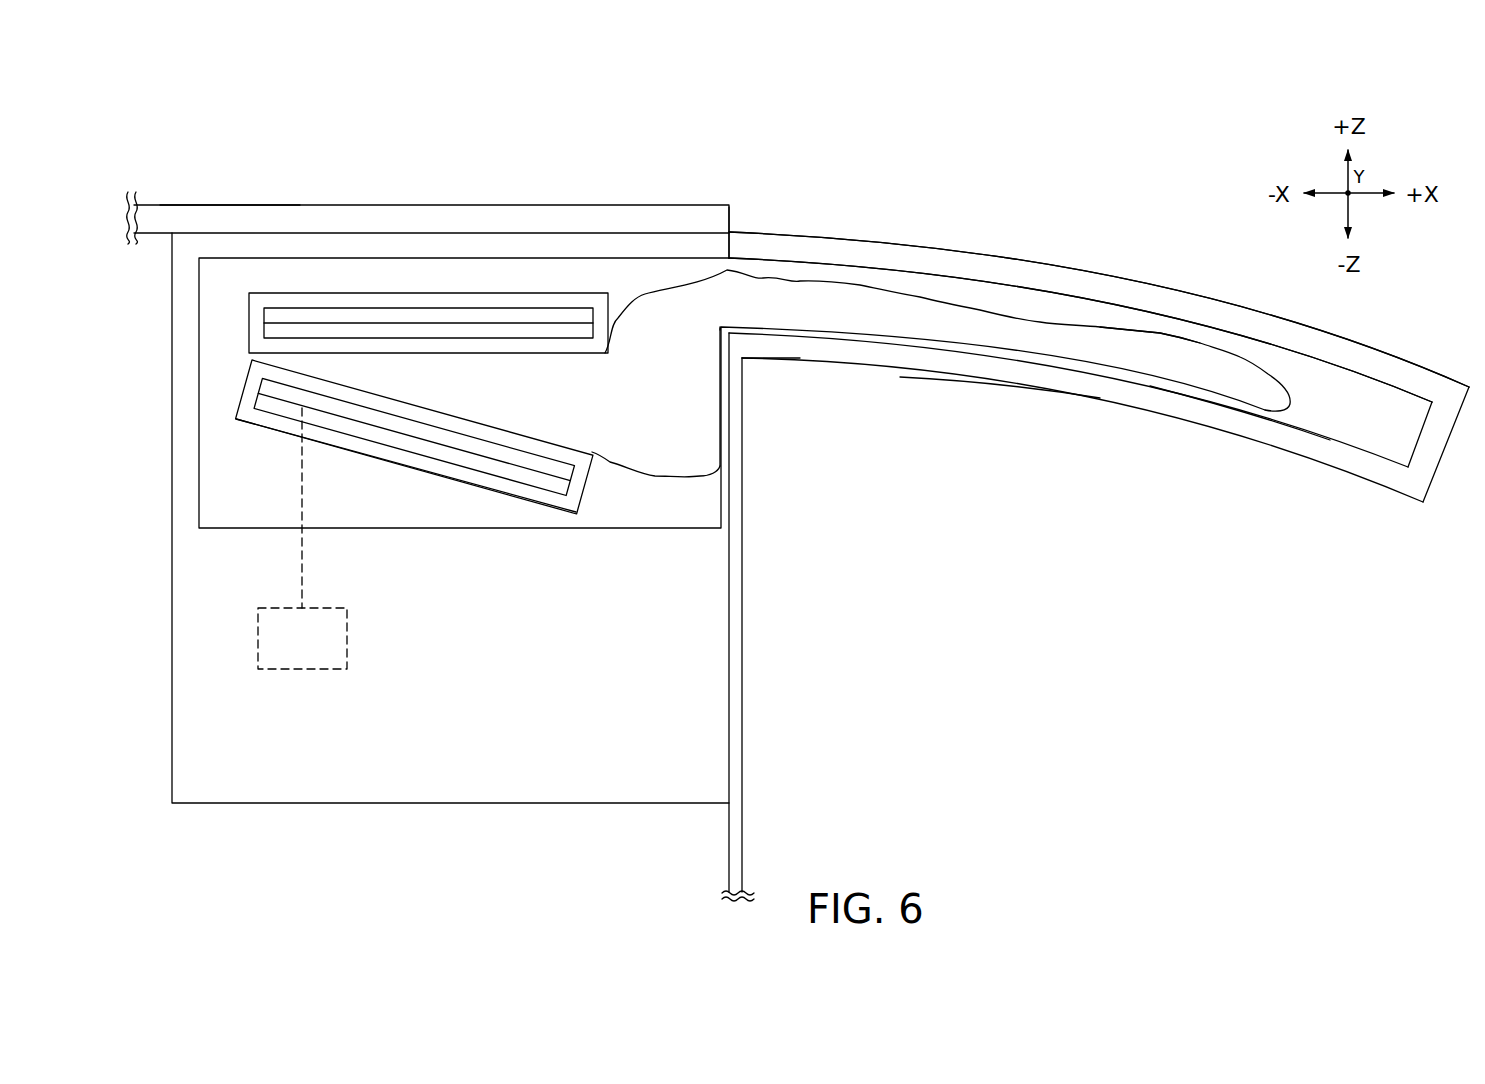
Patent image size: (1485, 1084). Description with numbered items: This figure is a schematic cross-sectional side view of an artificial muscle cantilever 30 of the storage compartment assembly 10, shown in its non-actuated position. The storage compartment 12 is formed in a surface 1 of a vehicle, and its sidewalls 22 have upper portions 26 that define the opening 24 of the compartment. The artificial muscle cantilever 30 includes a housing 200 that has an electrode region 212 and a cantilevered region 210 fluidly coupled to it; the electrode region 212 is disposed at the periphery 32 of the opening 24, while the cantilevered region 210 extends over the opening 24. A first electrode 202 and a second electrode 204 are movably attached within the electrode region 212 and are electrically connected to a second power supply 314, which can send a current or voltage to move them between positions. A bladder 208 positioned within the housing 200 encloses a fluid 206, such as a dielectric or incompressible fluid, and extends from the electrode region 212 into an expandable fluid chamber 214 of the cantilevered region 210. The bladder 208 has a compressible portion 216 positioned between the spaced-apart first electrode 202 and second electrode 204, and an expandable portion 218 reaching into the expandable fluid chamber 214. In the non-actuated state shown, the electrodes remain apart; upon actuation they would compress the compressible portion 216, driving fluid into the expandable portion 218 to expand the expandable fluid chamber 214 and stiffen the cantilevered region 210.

The storage compartment assembly 10 is at (153, 160).
The surface 1 is at (180, 205).
The artificial muscle cantilever 30 is at (606, 192).
The periphery 32 is at (731, 218).
The housing 200 is at (274, 250).
The first electrode 202 is at (333, 293).
The second electrode 204 is at (547, 442).
The compressible portion 216 is at (443, 375).
The expandable portion 218 is at (1160, 332).
The fluid 206 is at (692, 417).
The bladder 208 is at (660, 484).
The electrode region 212 is at (416, 478).
The storage compartment 12 is at (1099, 467).
The opening 24 is at (919, 378).
The upper portions 26 is at (738, 347).
The cantilevered region 210 is at (1042, 400).
The expandable fluid chamber 214 is at (1218, 404).
The sidewalls 22 is at (742, 618).
The second power supply 314 is at (300, 669).